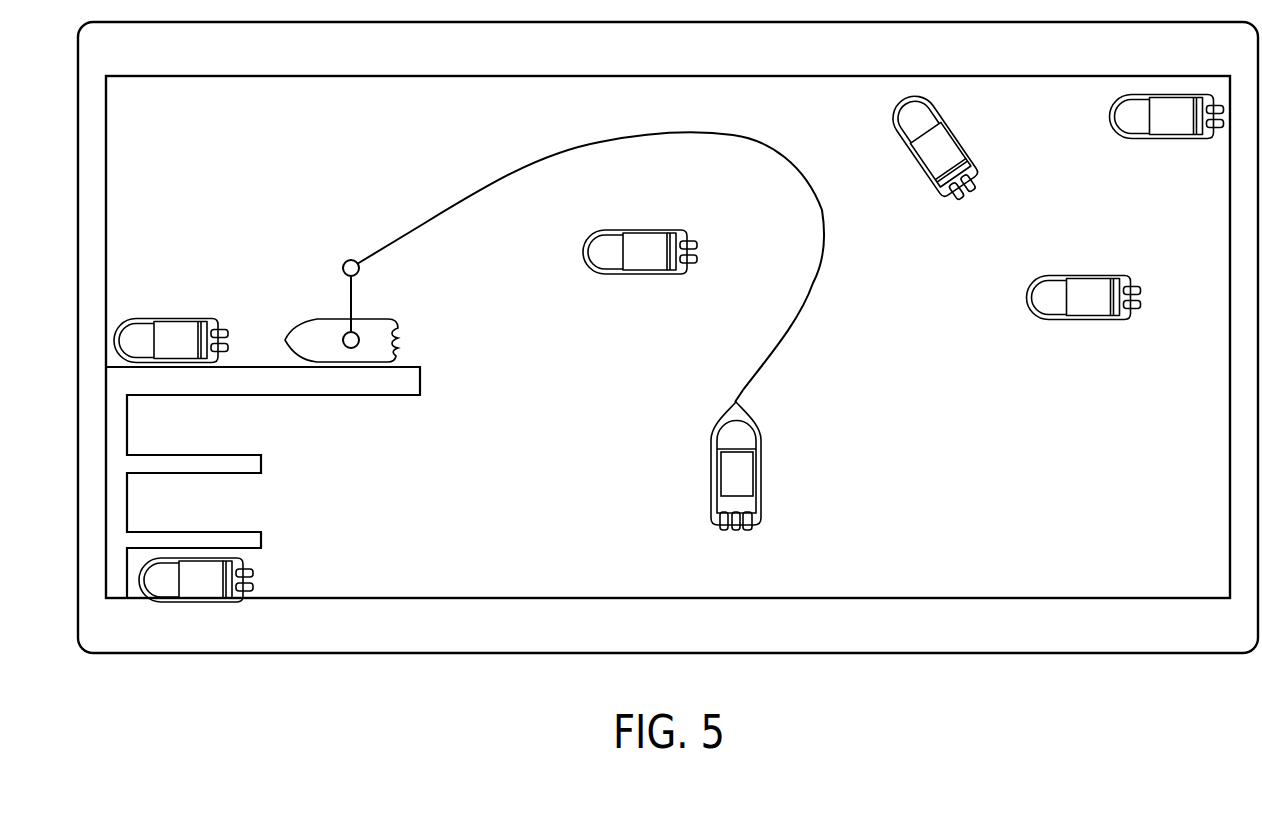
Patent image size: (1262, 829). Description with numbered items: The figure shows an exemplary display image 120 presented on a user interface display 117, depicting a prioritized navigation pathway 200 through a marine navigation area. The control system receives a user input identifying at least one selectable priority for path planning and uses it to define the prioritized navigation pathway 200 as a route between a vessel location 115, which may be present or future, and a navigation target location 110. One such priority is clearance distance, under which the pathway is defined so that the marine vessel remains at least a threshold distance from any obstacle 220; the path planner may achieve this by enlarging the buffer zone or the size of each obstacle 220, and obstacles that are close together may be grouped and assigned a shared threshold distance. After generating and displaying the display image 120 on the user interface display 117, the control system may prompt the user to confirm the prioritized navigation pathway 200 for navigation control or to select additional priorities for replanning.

The navigation target location 110 is at (398, 320).
The vessel location 115 is at (763, 475).
The user interface display 117 is at (878, 653).
The display image 120 is at (760, 598).
The prioritized navigation pathway 200 is at (762, 142).
The obstacle 220 is at (957, 135).